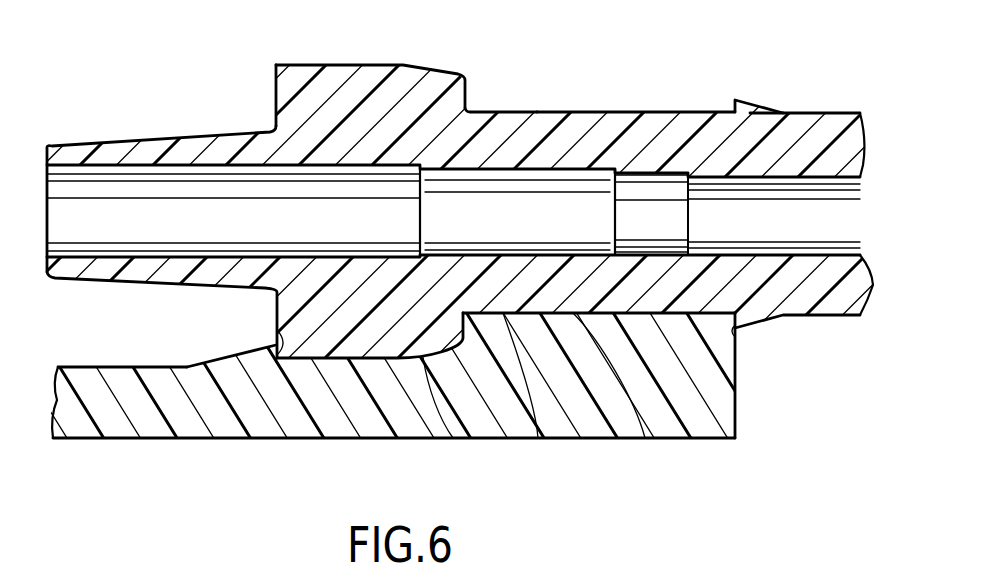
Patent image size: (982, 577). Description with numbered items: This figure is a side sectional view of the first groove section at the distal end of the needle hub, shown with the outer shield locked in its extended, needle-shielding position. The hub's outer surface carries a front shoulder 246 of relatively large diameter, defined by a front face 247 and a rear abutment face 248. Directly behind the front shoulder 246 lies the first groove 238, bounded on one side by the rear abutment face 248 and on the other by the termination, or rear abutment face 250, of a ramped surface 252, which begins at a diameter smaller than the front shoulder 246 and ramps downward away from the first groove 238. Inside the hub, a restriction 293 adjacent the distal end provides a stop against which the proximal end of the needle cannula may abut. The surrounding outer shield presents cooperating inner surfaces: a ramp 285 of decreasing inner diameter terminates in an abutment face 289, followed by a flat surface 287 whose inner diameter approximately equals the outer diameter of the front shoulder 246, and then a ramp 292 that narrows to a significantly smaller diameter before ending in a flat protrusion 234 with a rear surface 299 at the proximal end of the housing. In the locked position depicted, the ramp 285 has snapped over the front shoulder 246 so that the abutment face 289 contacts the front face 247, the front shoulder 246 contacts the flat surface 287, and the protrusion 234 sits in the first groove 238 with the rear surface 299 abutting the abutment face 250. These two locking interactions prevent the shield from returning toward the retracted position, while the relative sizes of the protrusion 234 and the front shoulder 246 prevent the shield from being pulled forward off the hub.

The flat protrusion 234 is at (728, 382).
The first groove 238 is at (537, 111).
The front shoulder 246 is at (333, 65).
The front face 247 is at (277, 103).
The rear abutment face 248 is at (464, 92).
The rear abutment face of ramped surface 250 is at (733, 103).
The ramped surface 252 is at (767, 112).
The ramp 285 is at (197, 364).
The flat surface 287 is at (453, 440).
The abutment face 289 is at (277, 336).
The ramp 292 is at (645, 440).
The restriction 293 is at (665, 176).
The rear surface 299 is at (737, 428).